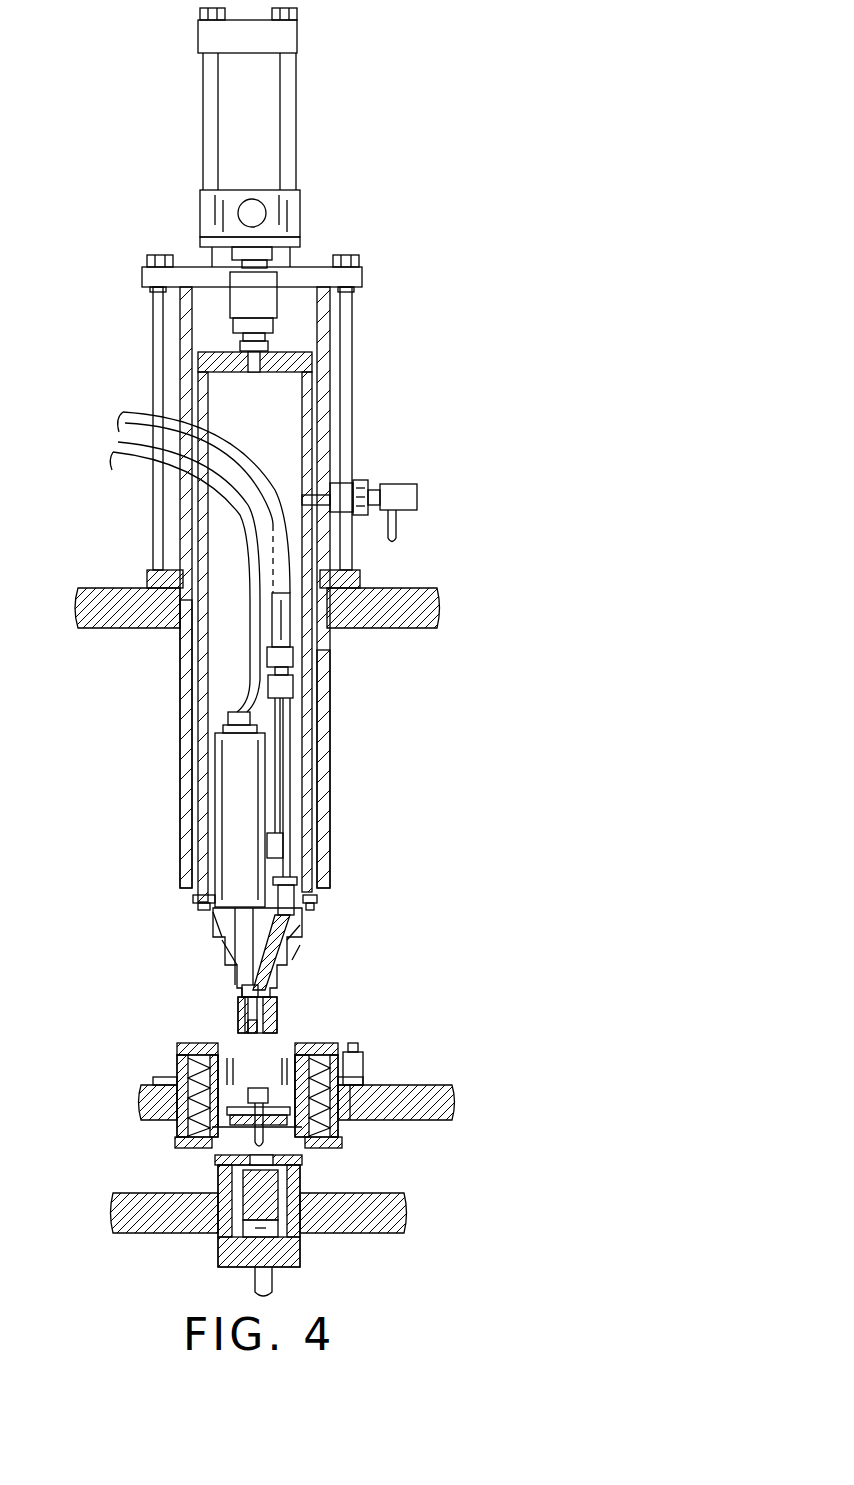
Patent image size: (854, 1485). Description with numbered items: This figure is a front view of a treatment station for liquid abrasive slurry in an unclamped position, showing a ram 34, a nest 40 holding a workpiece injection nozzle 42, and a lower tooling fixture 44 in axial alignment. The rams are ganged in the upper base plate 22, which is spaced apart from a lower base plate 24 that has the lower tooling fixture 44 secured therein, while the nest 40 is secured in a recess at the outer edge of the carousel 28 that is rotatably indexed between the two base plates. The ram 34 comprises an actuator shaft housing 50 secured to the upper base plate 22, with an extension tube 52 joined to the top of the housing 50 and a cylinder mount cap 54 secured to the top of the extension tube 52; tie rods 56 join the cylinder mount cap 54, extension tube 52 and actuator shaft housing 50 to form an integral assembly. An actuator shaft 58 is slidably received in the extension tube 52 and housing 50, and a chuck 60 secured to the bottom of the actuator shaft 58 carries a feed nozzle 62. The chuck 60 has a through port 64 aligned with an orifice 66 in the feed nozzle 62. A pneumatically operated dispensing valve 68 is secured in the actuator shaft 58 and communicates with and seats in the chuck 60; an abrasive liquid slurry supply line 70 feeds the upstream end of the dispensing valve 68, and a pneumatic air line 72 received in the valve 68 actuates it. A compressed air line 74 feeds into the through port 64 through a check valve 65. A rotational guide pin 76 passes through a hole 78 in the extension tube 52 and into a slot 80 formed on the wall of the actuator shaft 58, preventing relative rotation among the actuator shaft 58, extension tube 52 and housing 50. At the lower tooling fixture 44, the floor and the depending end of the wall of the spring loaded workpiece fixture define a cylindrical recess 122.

The upper base plate 22 is at (437, 608).
The lower base plate 24 is at (408, 1218).
The carousel 28 is at (445, 1098).
The ram 34 is at (368, 704).
The nest 40 is at (345, 1048).
The injection nozzle 42 is at (258, 1088).
The lower tooling fixture 44 is at (318, 1178).
The actuator shaft housing 50 is at (330, 765).
The extension tube 52 is at (328, 375).
The cylinder mount cap 54 is at (318, 265).
The tie rods 56 is at (155, 320).
The actuator shaft 58 is at (195, 678).
The chuck 60 is at (288, 965).
The feed nozzle 62 is at (275, 1020).
The through port 64 is at (240, 970).
The check valve 65 is at (288, 898).
The orifice 66 is at (242, 1025).
The dispensing valve 68 is at (235, 802).
The abrasive liquid slurry supply line 70 is at (220, 617).
The pneumatic air line 72 is at (110, 463).
The compressed air line 74 is at (125, 405).
The rotational guide pin 76 is at (320, 487).
The hole 78 is at (332, 520).
The slot 80 is at (310, 455).
The cylindrical recess 122 is at (230, 1137).